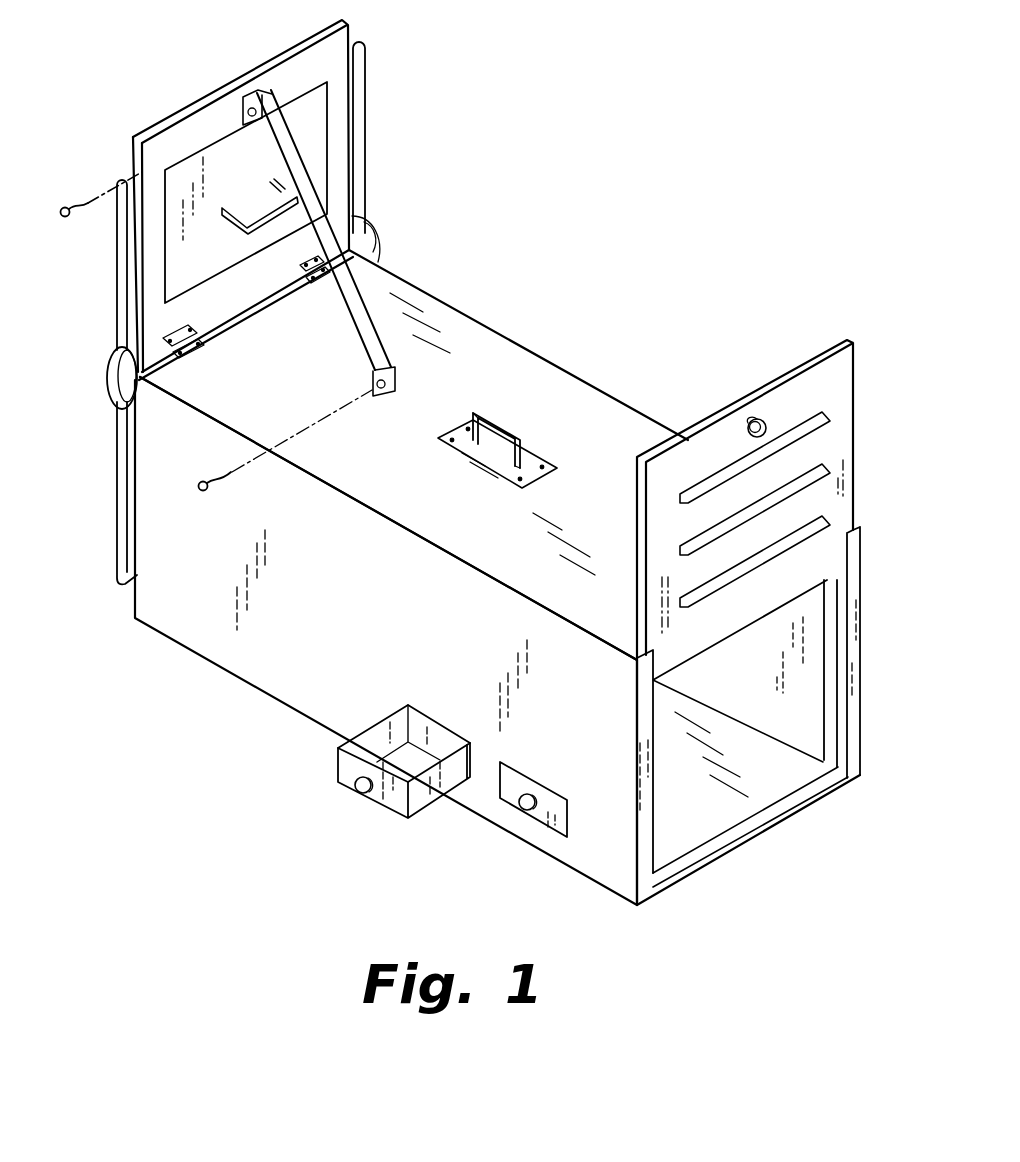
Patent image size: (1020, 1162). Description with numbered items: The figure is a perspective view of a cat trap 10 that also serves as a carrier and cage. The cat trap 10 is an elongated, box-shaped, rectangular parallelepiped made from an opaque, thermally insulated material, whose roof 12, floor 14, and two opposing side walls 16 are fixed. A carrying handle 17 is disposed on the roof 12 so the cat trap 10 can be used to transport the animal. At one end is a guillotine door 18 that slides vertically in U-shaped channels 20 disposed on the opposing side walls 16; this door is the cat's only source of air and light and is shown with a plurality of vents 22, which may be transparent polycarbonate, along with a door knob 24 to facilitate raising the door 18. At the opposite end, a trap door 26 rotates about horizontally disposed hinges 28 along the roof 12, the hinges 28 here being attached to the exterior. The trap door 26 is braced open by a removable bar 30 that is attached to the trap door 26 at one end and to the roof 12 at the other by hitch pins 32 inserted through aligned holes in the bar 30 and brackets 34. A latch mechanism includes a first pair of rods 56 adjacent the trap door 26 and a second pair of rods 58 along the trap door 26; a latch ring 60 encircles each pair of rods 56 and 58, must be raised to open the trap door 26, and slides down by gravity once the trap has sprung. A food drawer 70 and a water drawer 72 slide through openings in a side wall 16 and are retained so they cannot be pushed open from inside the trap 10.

The cat trap 10 is at (190, 751).
The roof 12 is at (578, 507).
The floor 14 is at (767, 798).
The side walls 16 is at (180, 622).
The carrying handle 17 is at (503, 422).
The guillotine door 18 is at (820, 351).
The U-shaped channels 20 is at (838, 626).
The vents 22 is at (810, 445).
The door knob 24 is at (808, 413).
The trap door 26 is at (238, 298).
The hinges 28 is at (197, 358).
The removable bar 30 is at (390, 262).
The hitch pins 32 is at (72, 203).
The brackets 34 is at (382, 398).
The first pair of rods 56 is at (118, 512).
The second pair of rods 58 is at (368, 96).
The latch ring 60 is at (108, 392).
The food drawer 70 is at (370, 727).
The water drawer 72 is at (516, 778).